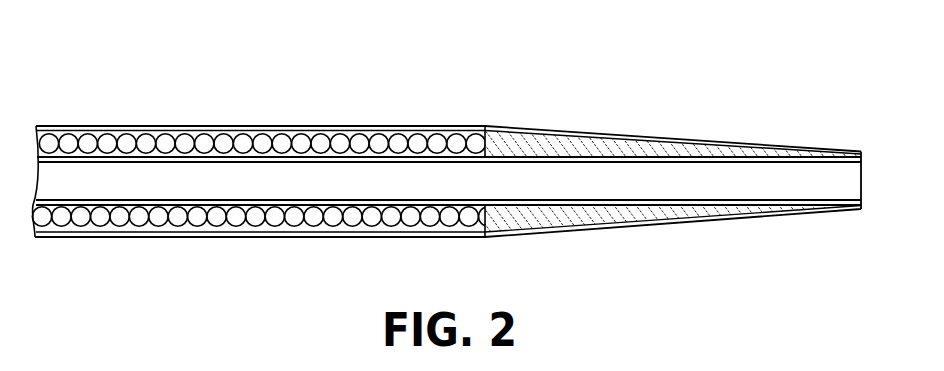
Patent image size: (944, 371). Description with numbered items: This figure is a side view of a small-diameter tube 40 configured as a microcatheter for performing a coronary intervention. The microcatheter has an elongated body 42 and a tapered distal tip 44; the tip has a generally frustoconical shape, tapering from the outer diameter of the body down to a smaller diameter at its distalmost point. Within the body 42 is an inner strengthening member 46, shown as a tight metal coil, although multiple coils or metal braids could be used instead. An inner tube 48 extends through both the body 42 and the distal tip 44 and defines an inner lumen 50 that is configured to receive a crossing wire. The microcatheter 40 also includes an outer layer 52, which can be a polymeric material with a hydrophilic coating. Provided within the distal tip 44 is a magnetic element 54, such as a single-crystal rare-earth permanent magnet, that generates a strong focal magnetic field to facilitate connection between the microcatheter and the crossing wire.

The small-diameter tube 40 is at (503, 50).
The elongated body 42 is at (262, 107).
The tapered distal tip 44 is at (682, 115).
The inner strengthening member 46 is at (175, 143).
The inner tube 48 is at (150, 199).
The inner lumen 50 is at (444, 192).
The outer layer 52 is at (90, 127).
The magnetic element 54 is at (590, 213).